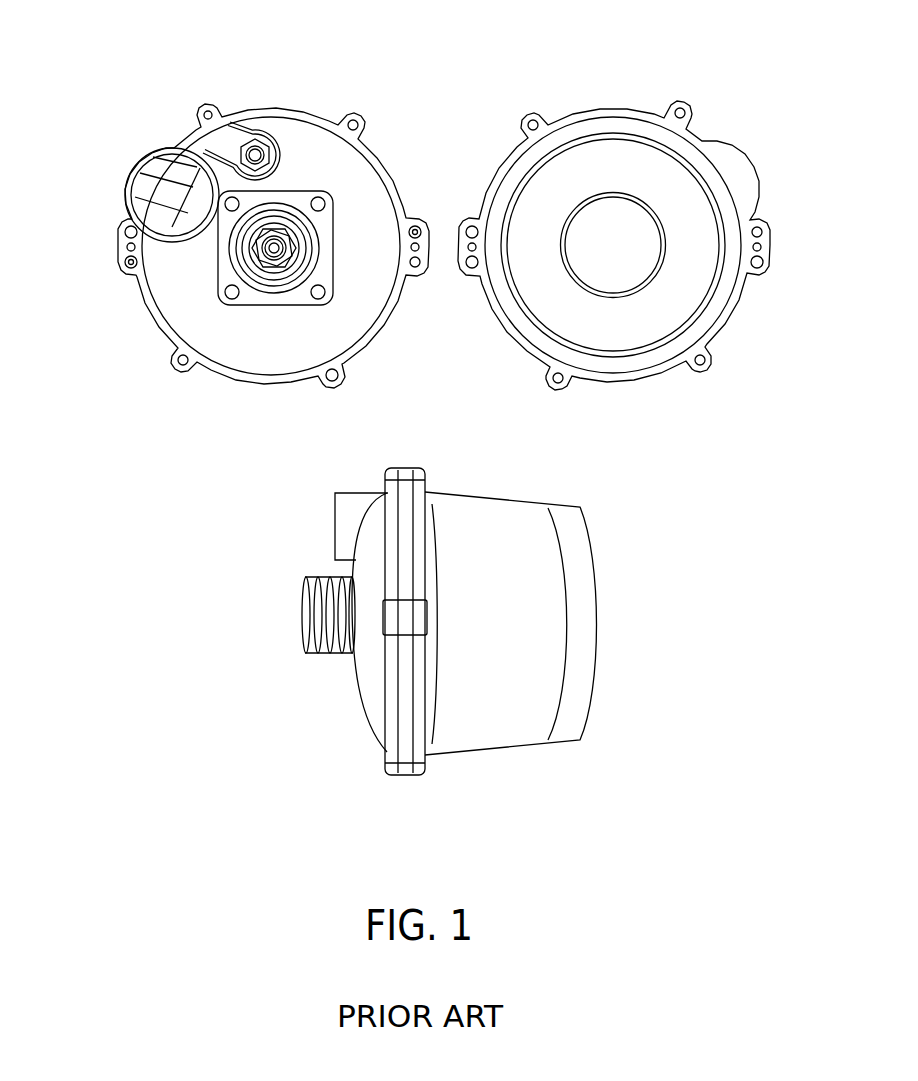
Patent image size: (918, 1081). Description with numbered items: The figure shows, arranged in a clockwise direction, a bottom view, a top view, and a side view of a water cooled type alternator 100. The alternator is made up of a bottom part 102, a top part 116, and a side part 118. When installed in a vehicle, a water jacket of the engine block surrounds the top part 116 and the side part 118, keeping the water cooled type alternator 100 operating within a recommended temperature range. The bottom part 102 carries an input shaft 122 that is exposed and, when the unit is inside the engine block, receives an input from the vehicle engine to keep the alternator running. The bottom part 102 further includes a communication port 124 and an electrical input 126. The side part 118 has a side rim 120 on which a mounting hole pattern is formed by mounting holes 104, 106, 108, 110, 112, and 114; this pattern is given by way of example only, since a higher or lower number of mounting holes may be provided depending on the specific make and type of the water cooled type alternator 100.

The water cooled type alternator 100 is at (140, 90).
The bottom part 102 is at (183, 297).
The mounting hole 104 is at (212, 108).
The mounting hole 106 is at (355, 120).
The mounting hole 108 is at (416, 268).
The mounting hole 110 is at (331, 378).
The mounting hole 112 is at (185, 362).
The mounting hole 114 is at (128, 247).
The top part 116 is at (667, 220).
The side part 118 is at (517, 597).
The side rim 120 is at (248, 380).
The input shaft 122 is at (285, 243).
The communication port 124 is at (162, 190).
The electrical input 126 is at (259, 147).